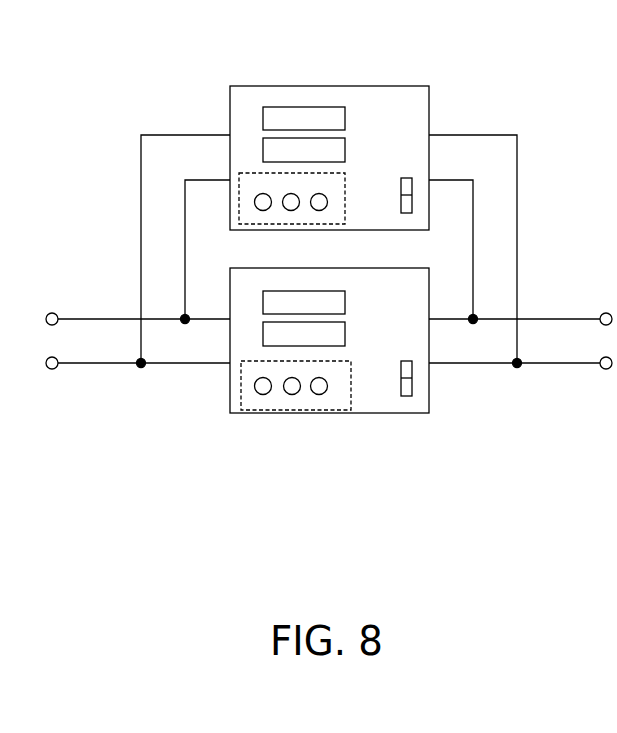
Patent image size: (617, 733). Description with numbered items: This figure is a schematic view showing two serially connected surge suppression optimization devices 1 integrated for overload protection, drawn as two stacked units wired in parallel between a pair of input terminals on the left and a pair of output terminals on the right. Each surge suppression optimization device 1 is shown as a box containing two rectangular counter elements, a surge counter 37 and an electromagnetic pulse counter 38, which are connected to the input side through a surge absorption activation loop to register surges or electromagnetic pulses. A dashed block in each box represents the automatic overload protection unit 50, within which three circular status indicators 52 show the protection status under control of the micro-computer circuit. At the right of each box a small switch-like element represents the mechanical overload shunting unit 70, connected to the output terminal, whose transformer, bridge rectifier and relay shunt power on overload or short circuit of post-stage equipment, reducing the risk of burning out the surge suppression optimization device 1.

The serially connected surge suppression optimization device 1 is at (432, 107).
The surge counter 37 is at (303, 107).
The electromagnetic pulse counter 38 is at (267, 152).
The automatic overload protection unit 50 is at (334, 393).
The status indicator 52 is at (267, 394).
The mechanical overload shunting unit 70 is at (407, 398).